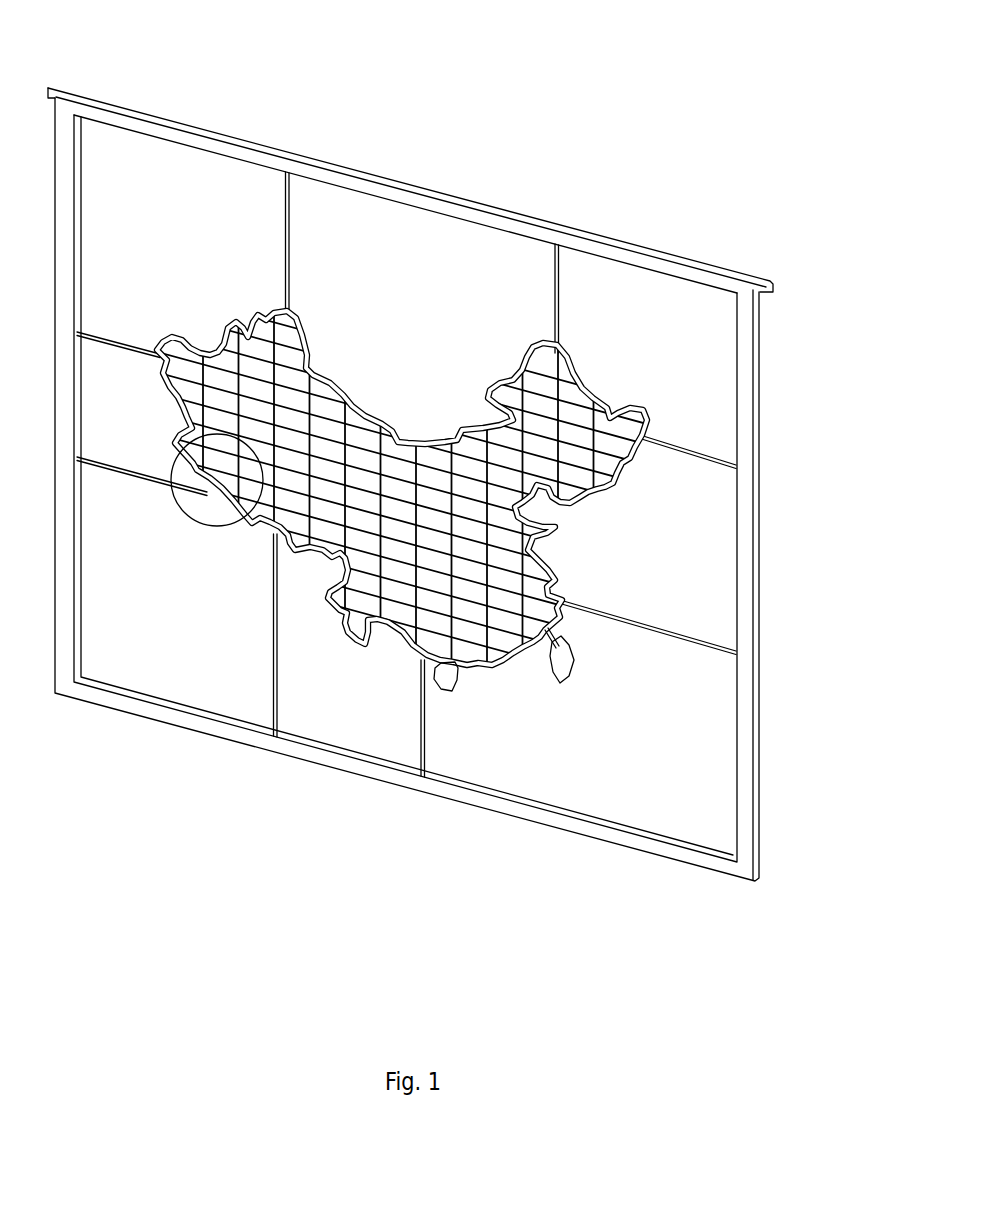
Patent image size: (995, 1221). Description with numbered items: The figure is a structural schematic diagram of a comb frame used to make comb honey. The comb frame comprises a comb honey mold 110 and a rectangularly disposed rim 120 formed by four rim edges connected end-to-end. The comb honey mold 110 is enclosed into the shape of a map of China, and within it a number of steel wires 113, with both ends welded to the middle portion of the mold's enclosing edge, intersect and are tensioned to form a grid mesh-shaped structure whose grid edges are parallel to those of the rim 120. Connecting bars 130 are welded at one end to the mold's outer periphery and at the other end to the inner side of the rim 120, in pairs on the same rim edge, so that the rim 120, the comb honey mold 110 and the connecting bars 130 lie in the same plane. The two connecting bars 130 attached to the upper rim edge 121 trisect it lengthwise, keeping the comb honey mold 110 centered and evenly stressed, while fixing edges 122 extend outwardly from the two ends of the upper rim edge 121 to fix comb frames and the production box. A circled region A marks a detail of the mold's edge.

The comb honey mold 110 is at (405, 588).
The steel wires 113 is at (467, 610).
The rim 120 is at (410, 474).
The upper rim edge 121 is at (432, 205).
The fixing edges 122 is at (56, 87).
The connecting bars 130 is at (290, 198).
The detail region A is at (217, 527).